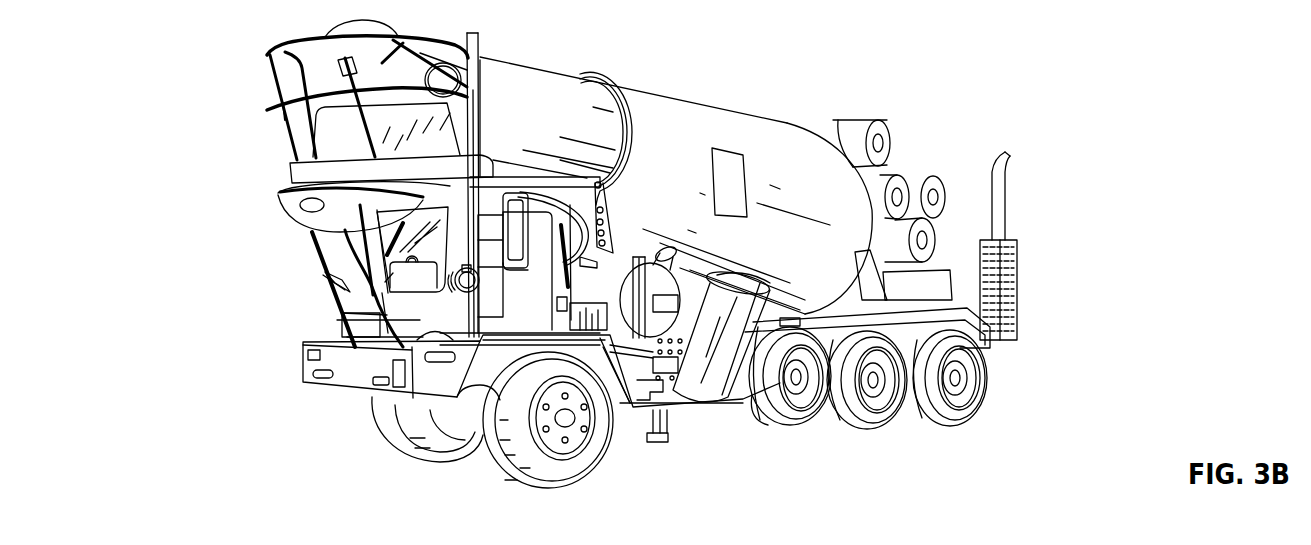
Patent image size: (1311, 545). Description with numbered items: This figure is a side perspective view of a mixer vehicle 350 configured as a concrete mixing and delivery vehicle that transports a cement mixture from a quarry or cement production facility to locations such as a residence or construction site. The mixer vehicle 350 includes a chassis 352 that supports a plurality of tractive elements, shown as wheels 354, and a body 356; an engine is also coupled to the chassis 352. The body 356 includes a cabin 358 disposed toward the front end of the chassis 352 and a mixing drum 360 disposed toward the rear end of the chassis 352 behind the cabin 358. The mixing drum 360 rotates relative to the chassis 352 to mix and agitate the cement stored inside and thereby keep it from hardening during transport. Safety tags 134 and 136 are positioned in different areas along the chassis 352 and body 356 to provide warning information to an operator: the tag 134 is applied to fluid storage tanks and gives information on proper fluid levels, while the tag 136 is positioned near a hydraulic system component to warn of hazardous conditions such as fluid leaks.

The mixer vehicle 350 is at (130, 44).
The chassis 352 is at (430, 450).
The wheels 354 is at (498, 458).
The body 356 is at (646, 108).
The cabin 358 is at (362, 305).
The mixing drum 360 is at (755, 130).
The tag 134 is at (657, 260).
The tag 136 is at (643, 413).